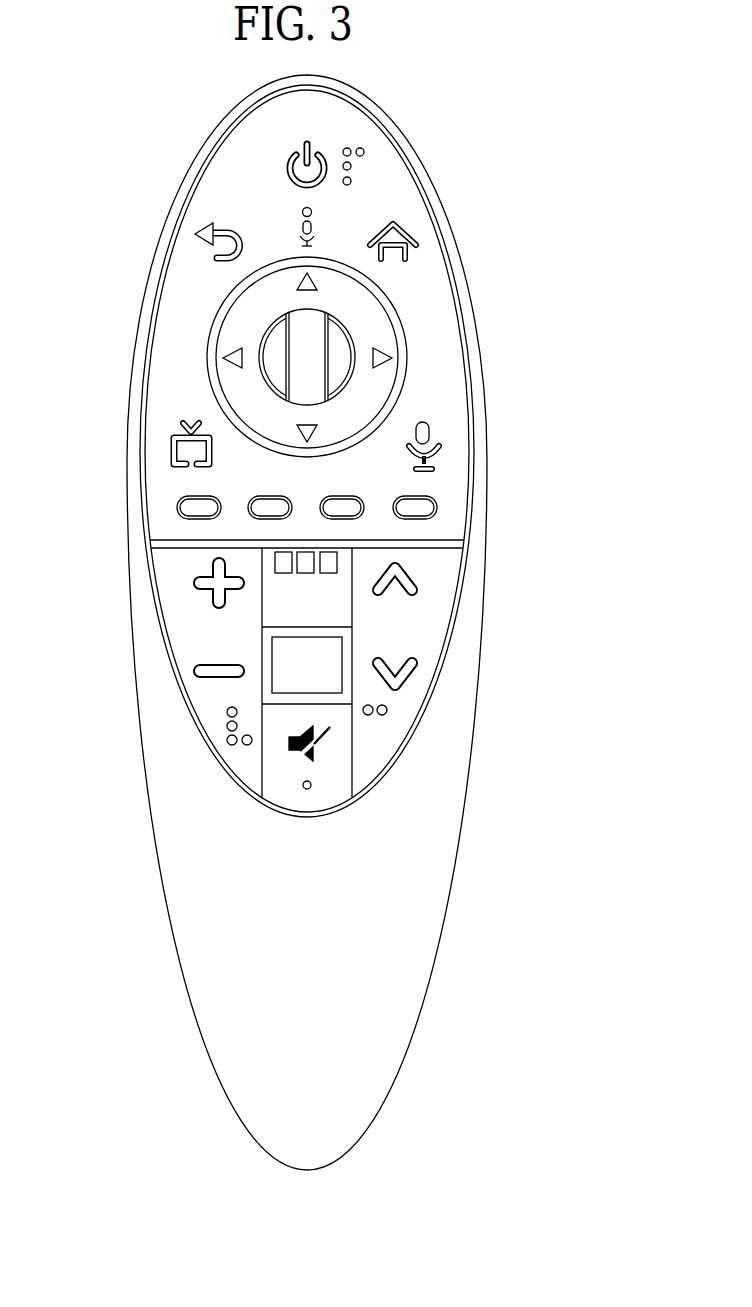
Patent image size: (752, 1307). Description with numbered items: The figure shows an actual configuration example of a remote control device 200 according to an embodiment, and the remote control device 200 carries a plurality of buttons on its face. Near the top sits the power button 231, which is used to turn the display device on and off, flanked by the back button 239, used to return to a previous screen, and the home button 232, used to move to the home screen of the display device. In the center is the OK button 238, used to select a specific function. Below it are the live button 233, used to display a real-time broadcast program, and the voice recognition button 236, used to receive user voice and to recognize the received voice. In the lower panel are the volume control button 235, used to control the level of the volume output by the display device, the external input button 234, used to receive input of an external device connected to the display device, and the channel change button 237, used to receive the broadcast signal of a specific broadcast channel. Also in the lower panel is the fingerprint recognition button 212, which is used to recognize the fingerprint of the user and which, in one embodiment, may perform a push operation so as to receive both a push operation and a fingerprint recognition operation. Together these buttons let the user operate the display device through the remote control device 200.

The remote control device 200 is at (76, 113).
The fingerprint recognition button 212 is at (320, 694).
The power button 231 is at (322, 158).
The home button 232 is at (407, 228).
The live button 233 is at (173, 450).
The external input button 234 is at (318, 555).
The volume control button 235 is at (160, 648).
The voice recognition button 236 is at (433, 446).
The channel change button 237 is at (433, 622).
The OK button 238 is at (272, 337).
The back button 239 is at (195, 241).